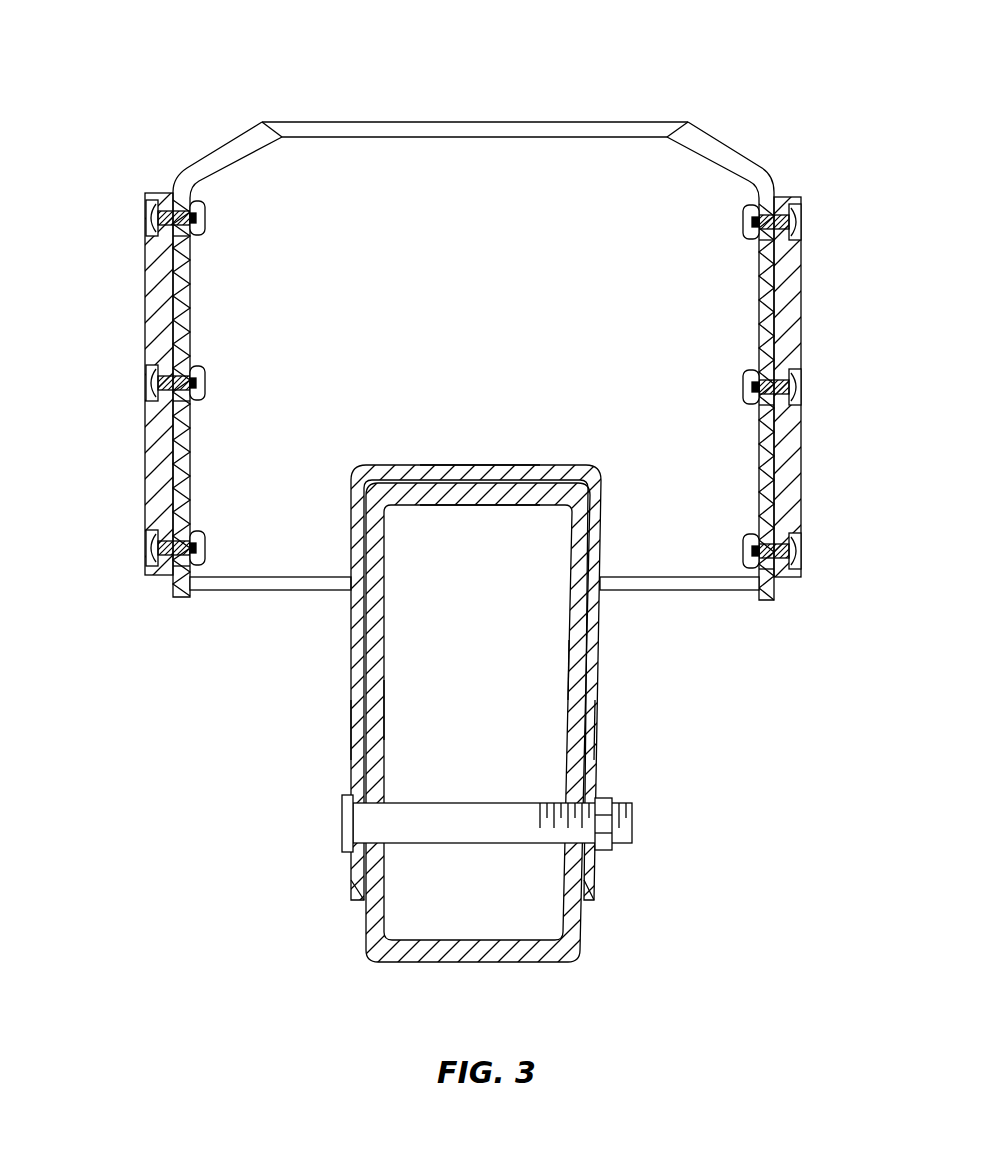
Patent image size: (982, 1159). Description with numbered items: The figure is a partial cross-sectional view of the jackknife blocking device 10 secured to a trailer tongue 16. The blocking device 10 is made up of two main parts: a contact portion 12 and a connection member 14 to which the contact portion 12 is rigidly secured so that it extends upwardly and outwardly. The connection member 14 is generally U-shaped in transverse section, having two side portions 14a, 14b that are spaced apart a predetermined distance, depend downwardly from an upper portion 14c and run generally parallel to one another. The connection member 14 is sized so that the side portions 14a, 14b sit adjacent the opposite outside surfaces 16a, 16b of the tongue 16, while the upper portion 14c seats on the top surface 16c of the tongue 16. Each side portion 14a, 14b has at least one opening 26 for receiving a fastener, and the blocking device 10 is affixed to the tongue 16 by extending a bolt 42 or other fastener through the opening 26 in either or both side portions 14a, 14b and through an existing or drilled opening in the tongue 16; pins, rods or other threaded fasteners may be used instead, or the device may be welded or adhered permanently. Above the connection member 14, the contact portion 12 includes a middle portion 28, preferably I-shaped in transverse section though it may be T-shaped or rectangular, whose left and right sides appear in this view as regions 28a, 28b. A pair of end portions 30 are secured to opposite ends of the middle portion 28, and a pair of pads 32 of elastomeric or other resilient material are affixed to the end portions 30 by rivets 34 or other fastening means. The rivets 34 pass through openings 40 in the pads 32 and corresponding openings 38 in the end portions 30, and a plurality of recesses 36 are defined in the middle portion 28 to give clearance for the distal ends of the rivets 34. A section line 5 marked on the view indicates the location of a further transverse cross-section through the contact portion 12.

The jackknife blocking device 10 is at (160, 790).
The contact portion 12 is at (473, 84).
The connection member 14 is at (257, 682).
The side portion 14a is at (357, 722).
The side portion 14b is at (597, 718).
The upper portion 14c is at (520, 468).
The trailer tongue 16 is at (600, 969).
The outside surface 16a is at (388, 712).
The outside surface 16b is at (570, 658).
The top surface 16c is at (475, 497).
The opening 26 is at (354, 865).
The middle portion 28 is at (459, 309).
The left side tube of frame 28a is at (212, 333).
The right side tube of frame 28b is at (737, 330).
The end portion 30 is at (215, 142).
The pad 32 is at (162, 495).
The rivet 34 is at (158, 230).
The recess 36 is at (212, 213).
The opening 38 is at (196, 236).
The opening 40 is at (145, 202).
The bolt 42 is at (502, 835).
The section line 5 is at (652, 122).